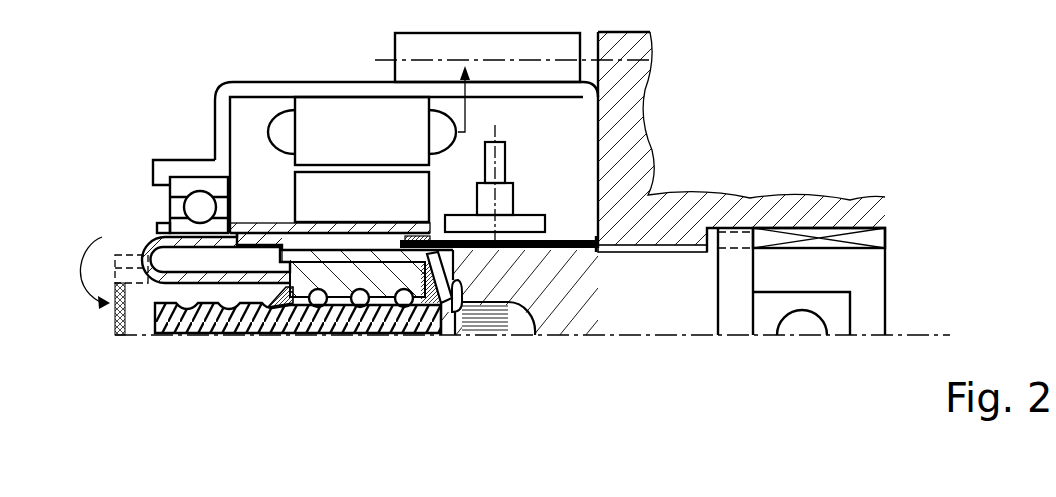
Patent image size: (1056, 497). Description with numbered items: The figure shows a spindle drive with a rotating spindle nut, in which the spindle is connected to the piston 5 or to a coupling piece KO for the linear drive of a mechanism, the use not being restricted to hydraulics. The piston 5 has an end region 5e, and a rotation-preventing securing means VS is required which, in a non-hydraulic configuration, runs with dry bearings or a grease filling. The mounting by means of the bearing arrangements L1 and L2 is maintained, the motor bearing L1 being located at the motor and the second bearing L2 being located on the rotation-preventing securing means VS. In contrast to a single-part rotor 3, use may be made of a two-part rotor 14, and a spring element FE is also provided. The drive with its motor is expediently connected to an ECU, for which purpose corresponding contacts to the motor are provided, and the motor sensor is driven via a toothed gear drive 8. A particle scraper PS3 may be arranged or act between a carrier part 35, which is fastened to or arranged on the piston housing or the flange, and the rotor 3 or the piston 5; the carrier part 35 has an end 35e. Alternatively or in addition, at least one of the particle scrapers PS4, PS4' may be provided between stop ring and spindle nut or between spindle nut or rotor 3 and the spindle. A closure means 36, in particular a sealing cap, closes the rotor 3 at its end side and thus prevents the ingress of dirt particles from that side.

The electronic control unit ECU is at (408, 50).
The particle scraper PS3 is at (417, 240).
The motor bearing L1 is at (190, 170).
The two-part rotor 14 is at (133, 253).
The spring element FE is at (150, 250).
The closure means 36 is at (115, 318).
The rotor 3 is at (220, 278).
The particle scraper PS4' is at (300, 354).
The particle scraper PS4 is at (435, 335).
The carrier part 35 is at (495, 250).
The adjustment element/piston 5 is at (547, 290).
The carrier end 35e is at (594, 253).
The end region of the adjustment element 5e is at (698, 316).
The coupling piece KO is at (800, 312).
The rotation-preventing securing means VS is at (731, 266).
The 2nd bearing on rotation-preventing securing means L2 is at (728, 232).
The toothed gear drive of the motor sensor 8 is at (507, 195).